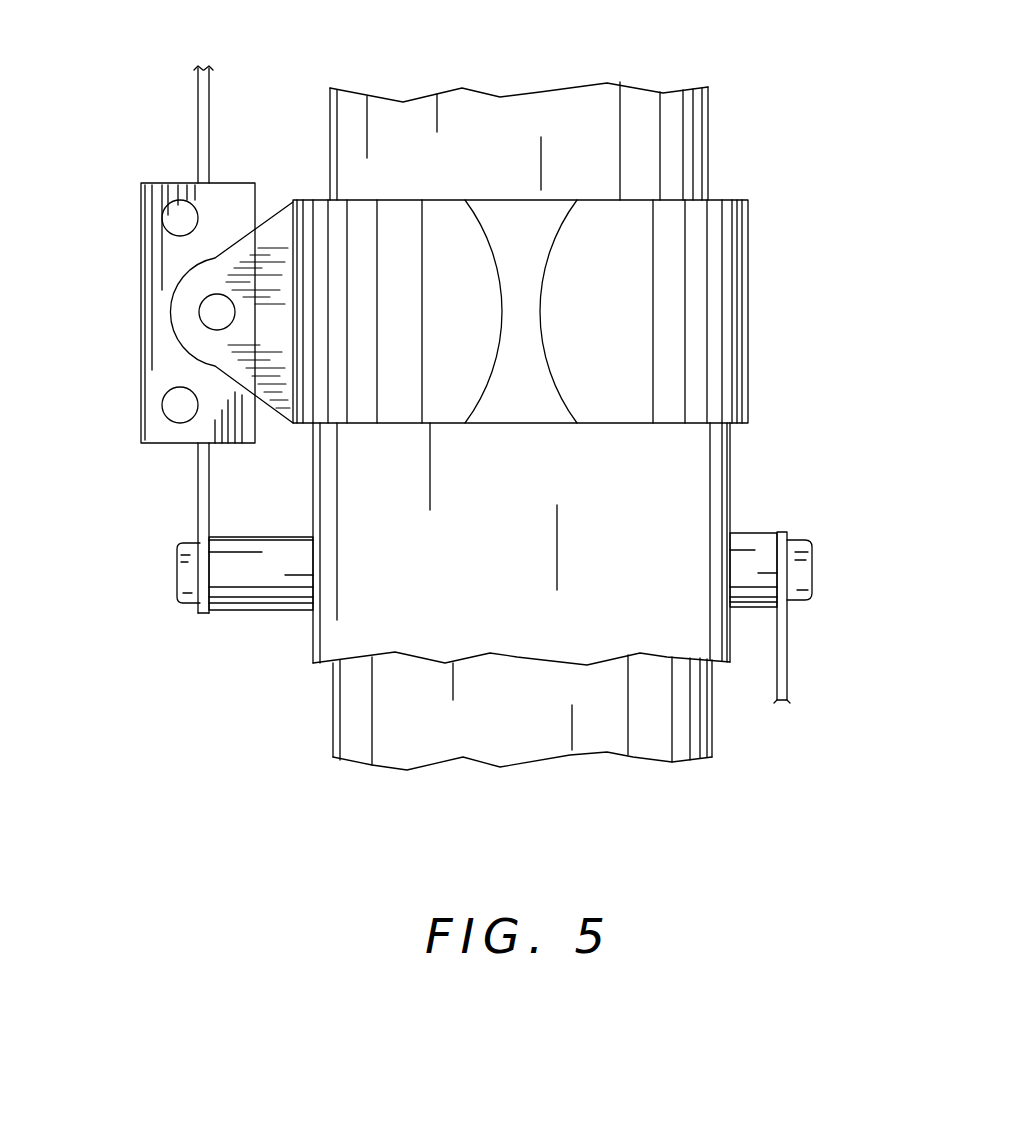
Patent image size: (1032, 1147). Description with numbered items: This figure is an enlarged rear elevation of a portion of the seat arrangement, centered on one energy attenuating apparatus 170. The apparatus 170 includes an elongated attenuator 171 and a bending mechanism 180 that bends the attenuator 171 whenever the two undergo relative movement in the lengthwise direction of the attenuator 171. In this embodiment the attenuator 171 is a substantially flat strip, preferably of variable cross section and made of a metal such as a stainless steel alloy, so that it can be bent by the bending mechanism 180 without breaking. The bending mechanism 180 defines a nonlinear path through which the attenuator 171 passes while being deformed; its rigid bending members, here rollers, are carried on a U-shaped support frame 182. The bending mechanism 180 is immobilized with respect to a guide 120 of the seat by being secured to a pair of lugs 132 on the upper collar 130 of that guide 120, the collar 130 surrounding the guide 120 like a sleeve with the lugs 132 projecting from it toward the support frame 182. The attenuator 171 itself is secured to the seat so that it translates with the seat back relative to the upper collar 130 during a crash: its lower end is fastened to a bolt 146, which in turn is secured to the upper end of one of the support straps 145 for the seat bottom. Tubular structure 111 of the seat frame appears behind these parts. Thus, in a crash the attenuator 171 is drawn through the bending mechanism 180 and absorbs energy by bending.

The pipe / conduit 111 is at (710, 135).
The guide 120 is at (732, 487).
The upper collar 130 is at (750, 318).
The lug 132 is at (288, 200).
The support strap 145 is at (790, 665).
The bolt 146 is at (812, 582).
The energy attenuating apparatus 170 is at (96, 152).
The attenuator 171 is at (198, 125).
The bending mechanism 180 is at (141, 300).
The support frame 182 is at (150, 402).